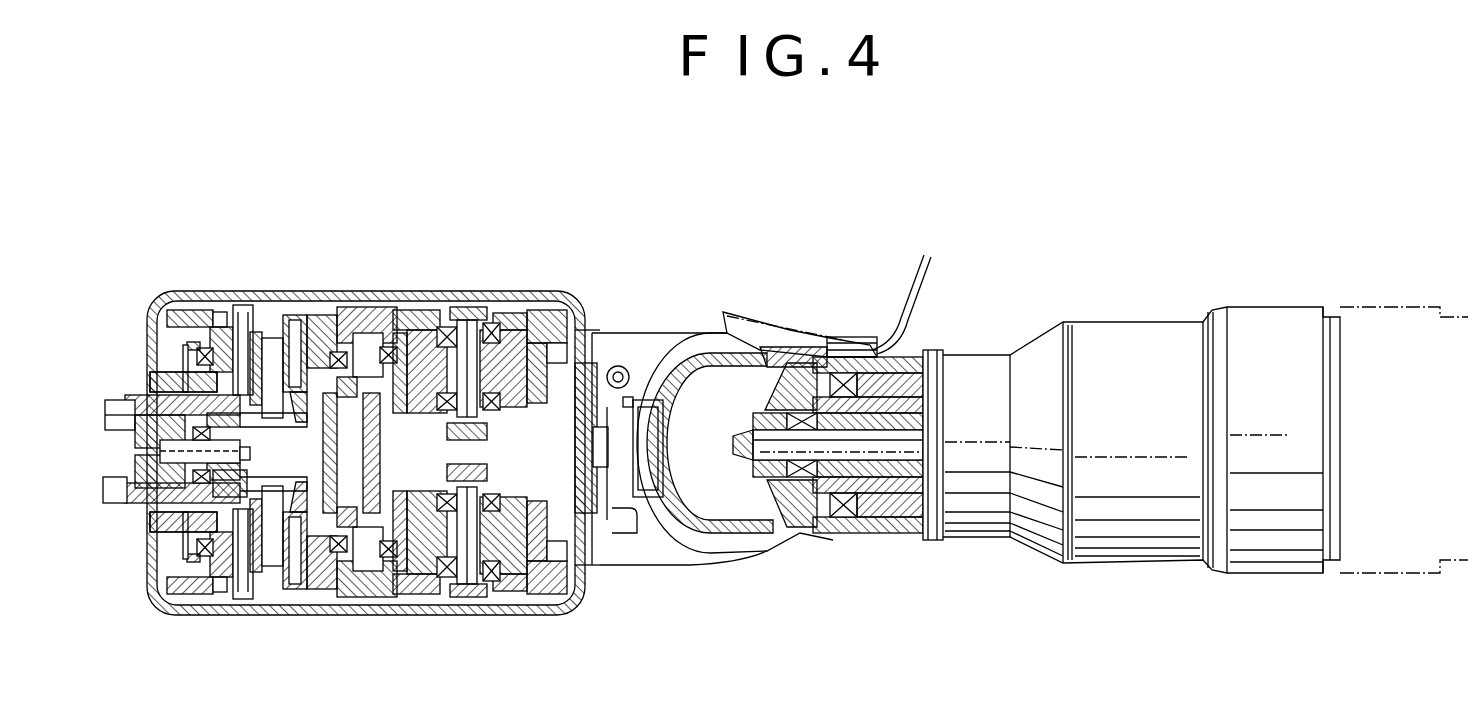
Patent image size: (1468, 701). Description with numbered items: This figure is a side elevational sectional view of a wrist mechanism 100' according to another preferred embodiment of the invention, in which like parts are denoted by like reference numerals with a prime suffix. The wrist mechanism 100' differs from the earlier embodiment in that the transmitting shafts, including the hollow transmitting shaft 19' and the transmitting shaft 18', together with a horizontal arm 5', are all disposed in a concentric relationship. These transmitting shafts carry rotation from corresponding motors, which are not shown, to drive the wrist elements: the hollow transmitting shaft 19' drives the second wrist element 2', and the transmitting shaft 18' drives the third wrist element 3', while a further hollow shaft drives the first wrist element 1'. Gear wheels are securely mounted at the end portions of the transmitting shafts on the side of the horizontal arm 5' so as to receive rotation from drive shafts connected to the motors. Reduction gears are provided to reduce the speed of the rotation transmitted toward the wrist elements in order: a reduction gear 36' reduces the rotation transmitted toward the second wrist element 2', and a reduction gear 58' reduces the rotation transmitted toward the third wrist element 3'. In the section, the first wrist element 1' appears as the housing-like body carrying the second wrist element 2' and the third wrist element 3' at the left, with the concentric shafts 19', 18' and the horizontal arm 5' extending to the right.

The wrist mechanism 100' is at (674, 193).
The reduction gear 58' is at (480, 328).
The first wrist element 1' is at (480, 401).
The second wrist element 2' is at (205, 474).
The third wrist element 3' is at (158, 449).
The reduction gear 36' is at (366, 485).
The horizontal arm 5' is at (1205, 411).
The transmitting shaft 19' is at (844, 476).
The transmitting shaft 18' is at (838, 473).